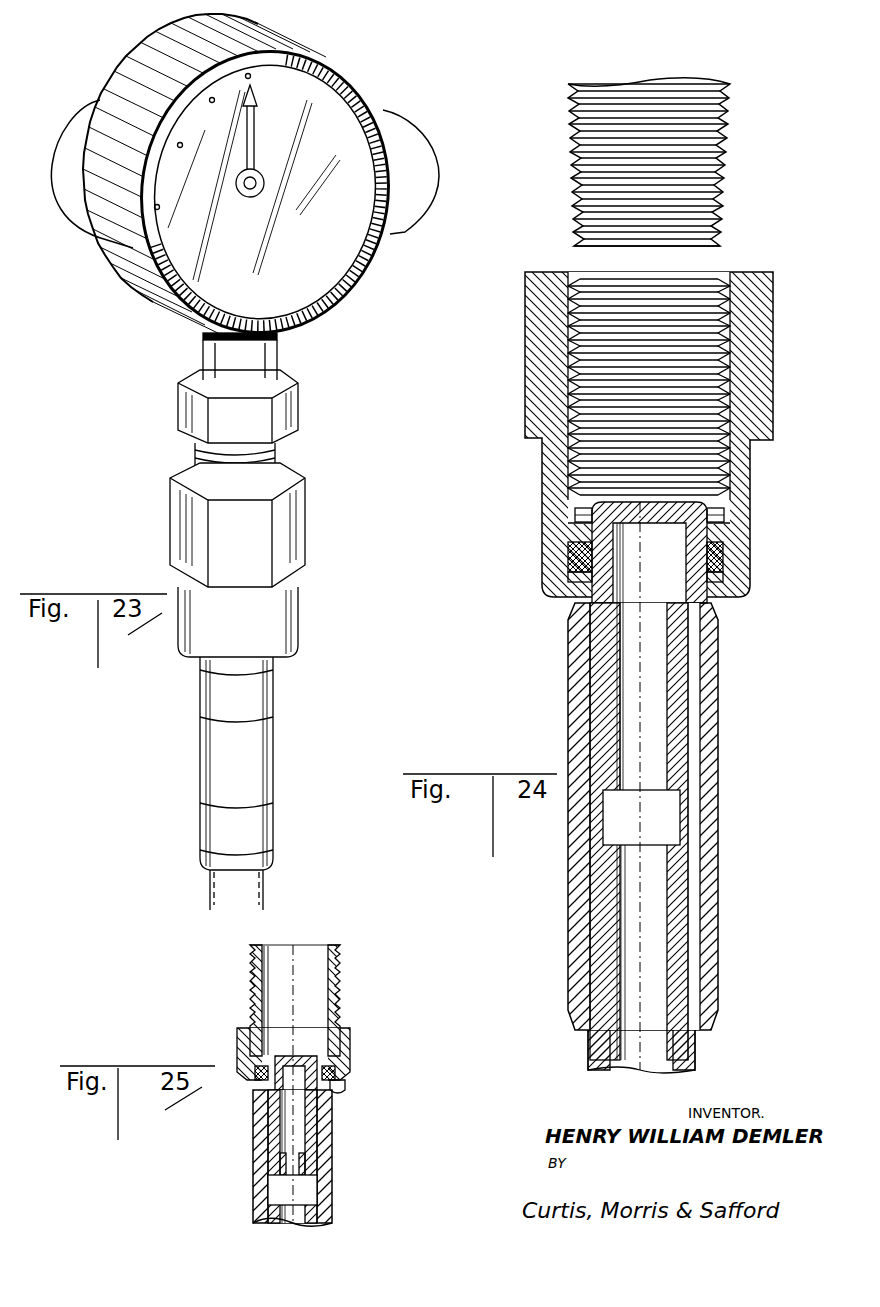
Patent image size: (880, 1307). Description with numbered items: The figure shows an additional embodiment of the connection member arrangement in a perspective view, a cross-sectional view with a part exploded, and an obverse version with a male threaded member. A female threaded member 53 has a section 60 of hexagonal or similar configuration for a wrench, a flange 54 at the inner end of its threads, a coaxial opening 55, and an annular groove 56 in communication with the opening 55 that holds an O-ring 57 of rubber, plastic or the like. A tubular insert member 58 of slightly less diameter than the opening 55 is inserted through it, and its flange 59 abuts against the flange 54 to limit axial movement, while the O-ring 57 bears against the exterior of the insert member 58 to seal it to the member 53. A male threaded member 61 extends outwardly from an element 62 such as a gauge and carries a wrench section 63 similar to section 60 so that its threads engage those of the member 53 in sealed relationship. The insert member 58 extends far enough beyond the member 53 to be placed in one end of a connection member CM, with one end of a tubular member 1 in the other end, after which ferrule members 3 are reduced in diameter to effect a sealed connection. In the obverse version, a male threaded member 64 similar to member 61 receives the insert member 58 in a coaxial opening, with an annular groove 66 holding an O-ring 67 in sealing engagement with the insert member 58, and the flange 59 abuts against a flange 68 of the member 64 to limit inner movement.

In FIG. 23, the element 62 is at (335, 295).
In FIG. 23, the section 63 is at (298, 402).
In FIG. 23, the male threaded member 61 is at (195, 460).
In FIG. 24, the male threaded member 61 is at (577, 182).
In FIG. 23, the section 60 is at (300, 540).
In FIG. 24, the section 60 is at (525, 352).
In FIG. 23, the female threaded member 53 is at (278, 622).
In FIG. 24, the female threaded member 53 is at (750, 520).
In FIG. 23, the connection member CM is at (200, 767).
In FIG. 24, the connection member CM is at (633, 786).
In FIG. 25, the connection member CM is at (298, 1084).
In FIG. 23, the tubular member 1 is at (262, 876).
In FIG. 24, the tubular member 1 is at (700, 1057).
In FIG. 25, the tubular member 1 is at (270, 1219).
In FIG. 24, the flange 59 is at (700, 512).
In FIG. 25, the flange 59 is at (300, 1062).
In FIG. 24, the flange 54 is at (703, 535).
In FIG. 24, the O-ring 57 is at (568, 555).
In FIG. 24, the annular groove 56 is at (570, 574).
In FIG. 24, the opening 55 is at (690, 583).
In FIG. 24, the tubular insert member 58 is at (680, 665).
In FIG. 25, the tubular insert member 58 is at (316, 1128).
In FIG. 24, the ferrule members 3 is at (712, 708).
In FIG. 25, the ferrule members 3 is at (255, 1130).
In FIG. 25, the male threaded member 64 is at (342, 982).
In FIG. 25, the flange 68 is at (255, 1066).
In FIG. 25, the annular groove 66 is at (328, 1070).
In FIG. 25, the O-ring 67 is at (340, 1088).